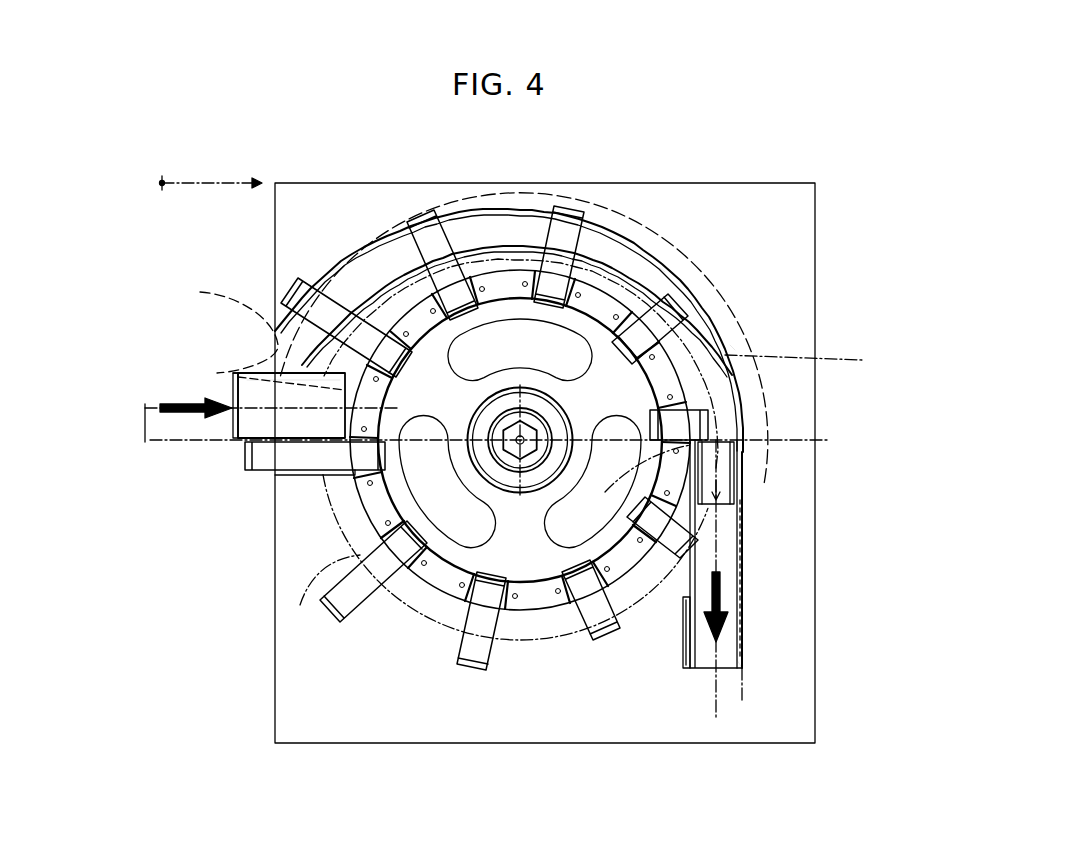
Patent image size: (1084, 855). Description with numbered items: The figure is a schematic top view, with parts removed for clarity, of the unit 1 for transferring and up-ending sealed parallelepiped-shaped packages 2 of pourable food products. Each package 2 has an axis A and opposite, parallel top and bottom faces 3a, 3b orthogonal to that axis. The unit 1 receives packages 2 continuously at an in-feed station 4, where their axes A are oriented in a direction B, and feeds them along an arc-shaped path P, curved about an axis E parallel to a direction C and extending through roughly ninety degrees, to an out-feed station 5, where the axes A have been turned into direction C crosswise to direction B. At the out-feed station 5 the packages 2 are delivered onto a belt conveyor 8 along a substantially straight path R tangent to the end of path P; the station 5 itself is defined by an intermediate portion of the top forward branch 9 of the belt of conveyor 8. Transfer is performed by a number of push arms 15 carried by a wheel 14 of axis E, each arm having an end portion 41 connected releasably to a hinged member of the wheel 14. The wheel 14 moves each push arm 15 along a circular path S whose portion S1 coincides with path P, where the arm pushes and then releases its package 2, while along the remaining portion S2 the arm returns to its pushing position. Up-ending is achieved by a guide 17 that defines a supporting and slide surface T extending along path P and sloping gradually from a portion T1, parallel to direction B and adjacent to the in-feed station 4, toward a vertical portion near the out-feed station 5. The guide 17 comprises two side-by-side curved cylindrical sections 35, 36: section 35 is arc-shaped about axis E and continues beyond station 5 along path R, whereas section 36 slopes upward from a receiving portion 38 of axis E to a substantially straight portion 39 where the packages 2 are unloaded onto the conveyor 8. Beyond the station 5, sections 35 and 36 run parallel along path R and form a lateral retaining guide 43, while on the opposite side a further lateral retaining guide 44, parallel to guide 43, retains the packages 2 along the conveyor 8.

The unit 1 is at (840, 178).
The package 2 is at (242, 475).
The top face 3a is at (235, 425).
The bottom face 3b is at (343, 422).
The in-feed station 4 is at (285, 412).
The out-feed station 5 is at (735, 462).
The belt conveyor 8 is at (748, 545).
The top forward branch 9 is at (706, 675).
The wheel 14 is at (665, 330).
The push arm 15 is at (340, 300).
The guide 17 is at (657, 220).
The curved cylindrical section 35 is at (635, 268).
The curved cylindrical section 36 is at (612, 222).
The receiving portion 38 is at (332, 275).
The straight portion 39 is at (730, 345).
The end portion 41 is at (755, 640).
The lateral retaining guide 43 is at (690, 675).
The lateral retaining guide 44 is at (745, 665).
The package axis A is at (145, 448).
The direction B is at (230, 183).
The direction C is at (162, 183).
The axis E is at (493, 507).
The path P is at (600, 210).
The path R is at (748, 735).
The circular path S is at (515, 660).
The path portion S1 is at (793, 349).
The path portion S2 is at (330, 601).
The supporting and slide surface T is at (485, 195).
The surface portion T1 is at (436, 375).